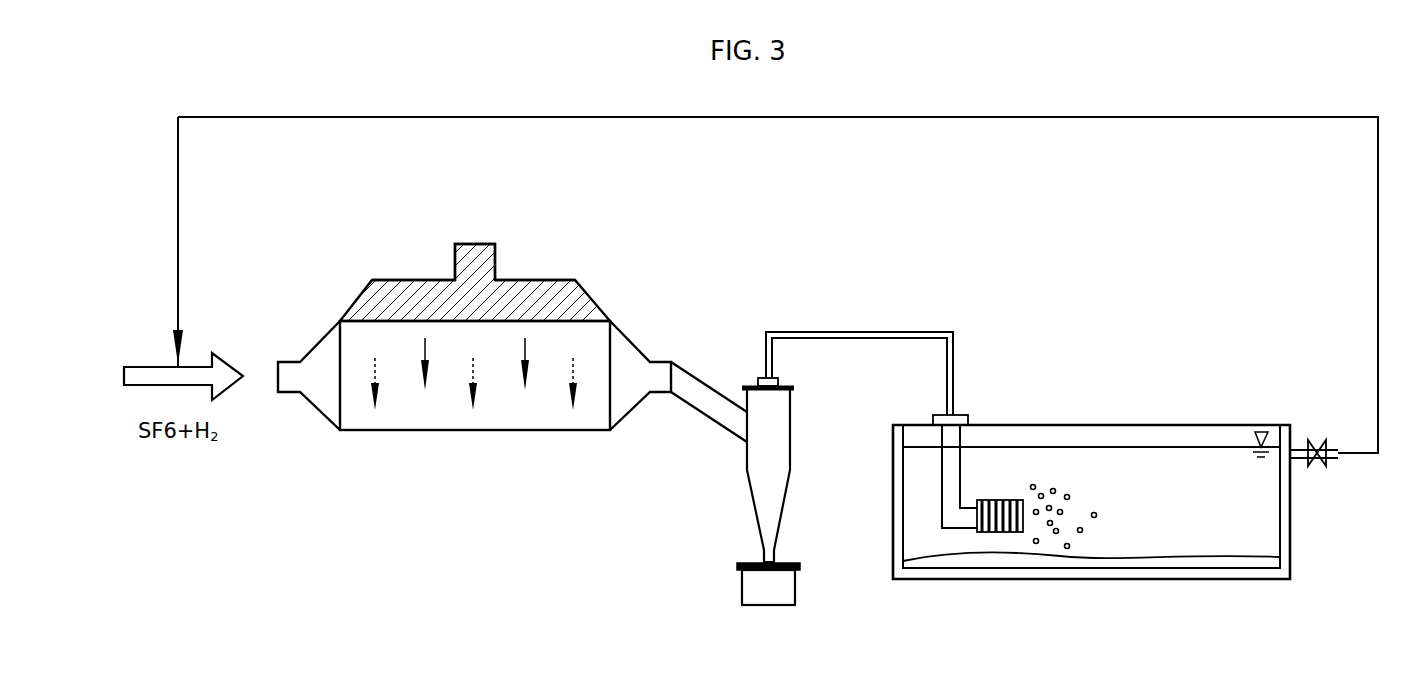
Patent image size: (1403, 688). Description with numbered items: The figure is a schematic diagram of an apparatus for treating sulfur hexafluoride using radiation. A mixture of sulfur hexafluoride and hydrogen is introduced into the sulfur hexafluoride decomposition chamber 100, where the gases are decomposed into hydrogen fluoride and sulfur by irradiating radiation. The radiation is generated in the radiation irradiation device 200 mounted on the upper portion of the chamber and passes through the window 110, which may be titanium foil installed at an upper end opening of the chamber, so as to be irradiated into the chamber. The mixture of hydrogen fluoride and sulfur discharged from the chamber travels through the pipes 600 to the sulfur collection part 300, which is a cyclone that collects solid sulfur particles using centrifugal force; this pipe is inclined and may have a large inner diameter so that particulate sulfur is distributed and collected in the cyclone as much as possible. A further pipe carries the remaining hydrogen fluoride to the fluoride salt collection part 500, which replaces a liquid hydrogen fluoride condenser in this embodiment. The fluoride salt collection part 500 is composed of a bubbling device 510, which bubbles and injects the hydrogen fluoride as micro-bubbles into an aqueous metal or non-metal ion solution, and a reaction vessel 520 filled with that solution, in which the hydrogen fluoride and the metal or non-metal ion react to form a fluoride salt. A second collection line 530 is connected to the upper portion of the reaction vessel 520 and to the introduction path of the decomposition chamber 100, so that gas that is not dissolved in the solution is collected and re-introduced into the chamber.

The sulfur hexafluoride decomposition chamber 100 is at (450, 431).
The window 110 is at (418, 320).
The radiation irradiation device 200 is at (548, 286).
The sulfur collection part 300 is at (768, 491).
The fluoride salt collection part 500 is at (1091, 403).
The bubbling device 510 is at (1003, 450).
The reaction vessel 520 is at (1073, 424).
The second collection line 530 is at (1378, 332).
The pipes 600 is at (712, 407).